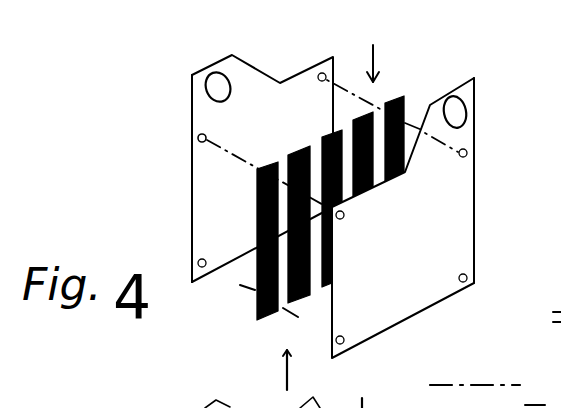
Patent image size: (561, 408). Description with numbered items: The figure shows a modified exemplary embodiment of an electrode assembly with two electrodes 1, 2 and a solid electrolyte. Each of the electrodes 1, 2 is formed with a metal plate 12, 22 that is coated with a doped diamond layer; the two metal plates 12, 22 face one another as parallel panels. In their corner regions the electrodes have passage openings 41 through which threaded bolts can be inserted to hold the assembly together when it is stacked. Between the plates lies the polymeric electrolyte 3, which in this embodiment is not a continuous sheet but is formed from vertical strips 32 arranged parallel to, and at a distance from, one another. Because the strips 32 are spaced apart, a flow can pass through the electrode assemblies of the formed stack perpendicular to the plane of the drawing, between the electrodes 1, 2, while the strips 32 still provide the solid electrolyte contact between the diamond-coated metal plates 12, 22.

The electrode 1 is at (478, 132).
The electrode 2 is at (193, 180).
The polymeric electrolyte 3 is at (307, 195).
The metal plate 12 is at (403, 297).
The metal plate 22 is at (207, 214).
The strip 32 is at (213, 269).
The passage opening 41 is at (192, 135).